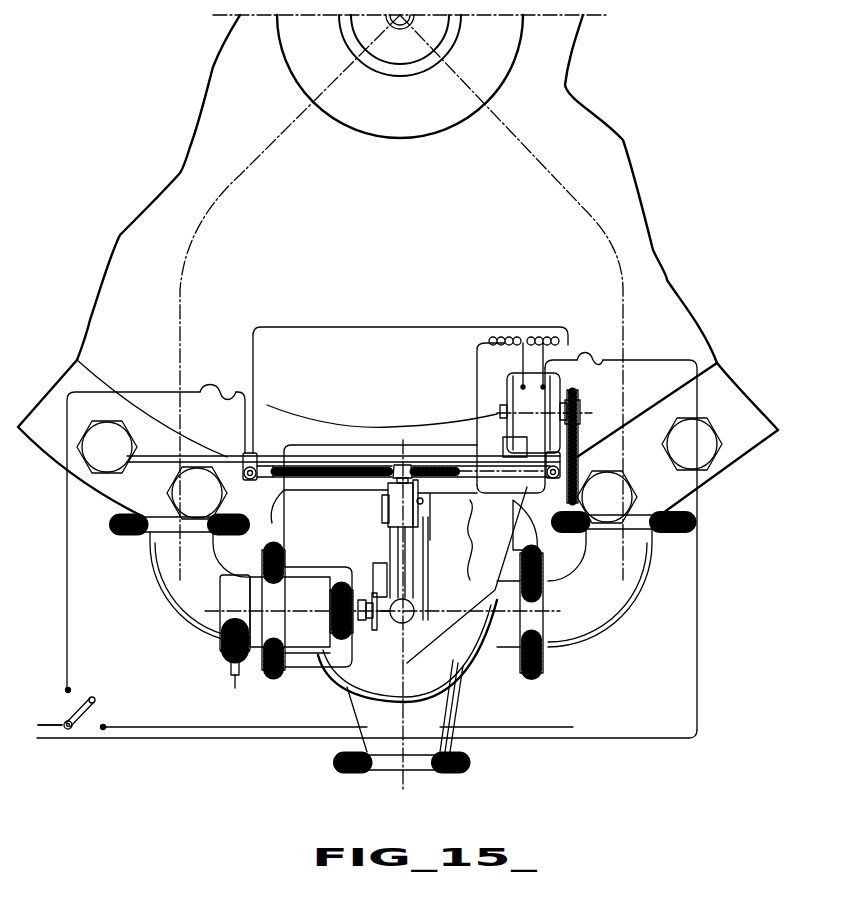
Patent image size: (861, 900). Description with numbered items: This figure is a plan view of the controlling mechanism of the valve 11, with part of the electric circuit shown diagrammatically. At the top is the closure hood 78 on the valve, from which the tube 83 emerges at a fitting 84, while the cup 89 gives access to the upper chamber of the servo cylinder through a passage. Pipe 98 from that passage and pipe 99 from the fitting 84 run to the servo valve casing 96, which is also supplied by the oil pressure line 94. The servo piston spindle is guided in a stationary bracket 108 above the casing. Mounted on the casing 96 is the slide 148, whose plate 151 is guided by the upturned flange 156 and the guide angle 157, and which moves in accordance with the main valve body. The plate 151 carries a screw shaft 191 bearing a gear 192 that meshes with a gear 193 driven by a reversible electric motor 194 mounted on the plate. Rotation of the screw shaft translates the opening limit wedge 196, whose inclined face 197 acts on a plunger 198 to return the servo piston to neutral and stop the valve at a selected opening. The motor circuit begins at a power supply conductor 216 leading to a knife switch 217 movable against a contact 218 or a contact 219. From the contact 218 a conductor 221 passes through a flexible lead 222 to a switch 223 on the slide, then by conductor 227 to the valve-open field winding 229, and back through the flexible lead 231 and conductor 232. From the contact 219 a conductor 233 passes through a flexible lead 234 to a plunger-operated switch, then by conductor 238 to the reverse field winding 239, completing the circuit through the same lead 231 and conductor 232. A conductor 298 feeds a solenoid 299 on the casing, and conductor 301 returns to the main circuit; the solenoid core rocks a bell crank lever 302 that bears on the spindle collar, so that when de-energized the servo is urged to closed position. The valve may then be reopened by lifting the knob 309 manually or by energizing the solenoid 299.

The valve 11 is at (628, 145).
The closure hood 78 is at (565, 82).
The tube 83 is at (395, 30).
The fitting 84 is at (362, 40).
The cup 89 is at (498, 80).
The pressure line 94 is at (377, 768).
The servo valve casing 96 is at (465, 682).
The pipe 98 is at (245, 183).
The pipe 99 is at (548, 170).
The stationary bracket 108 is at (390, 553).
The slide 148 is at (152, 462).
The plate 151 is at (315, 462).
The upturned flange 156 is at (295, 445).
The guide angle 157 is at (302, 488).
The screw shaft 191 is at (347, 467).
The gear 192 is at (578, 428).
The gear 193 is at (573, 393).
The reversible electric motor 194 is at (512, 388).
The opening limit wedge 196 is at (397, 465).
The inclined face 197 is at (412, 465).
The plunger 198 is at (385, 487).
The power supply conductor 216 is at (53, 723).
The knife switch 217 is at (93, 697).
The contact 218 is at (66, 690).
The contact 219 is at (105, 724).
The conductor 221 is at (67, 515).
The flexible lead 222 is at (217, 388).
The switch 223 is at (248, 482).
The conductor 227 is at (293, 327).
The valve open field winding 229 is at (540, 333).
The flexible lead 231 is at (600, 360).
The conductor 232 is at (625, 727).
The conductor 233 is at (270, 727).
The flexible lead 234 is at (478, 556).
The conductor 238 is at (477, 380).
The reverse field winding 239 is at (490, 337).
The conductor 298 is at (232, 672).
The solenoid 299 is at (223, 622).
The conductor 301 is at (235, 684).
The bell crank lever 302 is at (385, 623).
The knob 309 is at (405, 619).